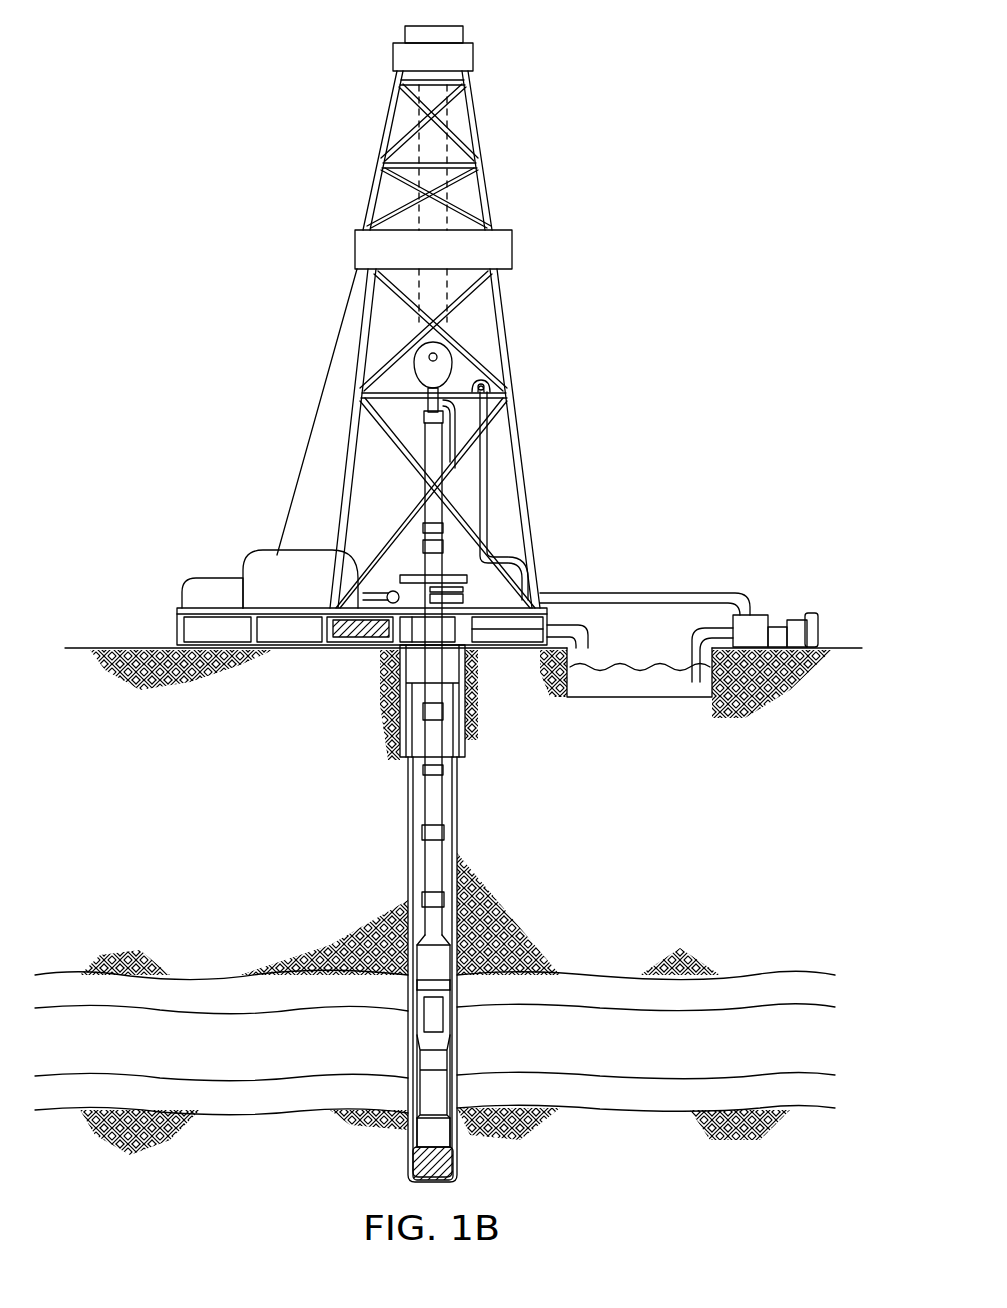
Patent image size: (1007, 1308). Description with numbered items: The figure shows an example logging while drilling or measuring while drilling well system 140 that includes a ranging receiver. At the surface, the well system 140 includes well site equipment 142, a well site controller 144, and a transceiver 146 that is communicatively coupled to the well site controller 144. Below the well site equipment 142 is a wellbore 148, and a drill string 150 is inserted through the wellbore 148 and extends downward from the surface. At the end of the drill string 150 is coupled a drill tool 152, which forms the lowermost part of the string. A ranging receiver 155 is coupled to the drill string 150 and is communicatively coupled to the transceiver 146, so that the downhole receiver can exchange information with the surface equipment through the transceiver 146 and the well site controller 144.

The well system 140 is at (283, 84).
The well site equipment 142 is at (511, 348).
The well site controller 144 is at (290, 633).
The transceiver 146 is at (355, 633).
The wellbore 148 is at (420, 862).
The drill string 150 is at (443, 803).
The drill tool 152 is at (452, 1153).
The ranging receiver 155 is at (430, 1133).